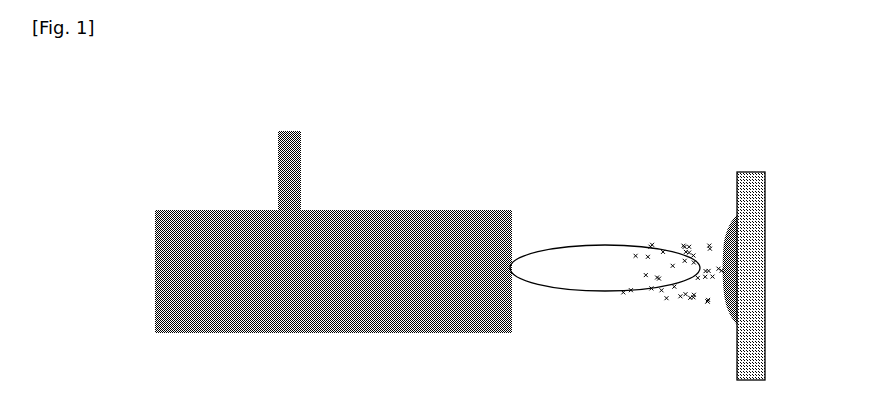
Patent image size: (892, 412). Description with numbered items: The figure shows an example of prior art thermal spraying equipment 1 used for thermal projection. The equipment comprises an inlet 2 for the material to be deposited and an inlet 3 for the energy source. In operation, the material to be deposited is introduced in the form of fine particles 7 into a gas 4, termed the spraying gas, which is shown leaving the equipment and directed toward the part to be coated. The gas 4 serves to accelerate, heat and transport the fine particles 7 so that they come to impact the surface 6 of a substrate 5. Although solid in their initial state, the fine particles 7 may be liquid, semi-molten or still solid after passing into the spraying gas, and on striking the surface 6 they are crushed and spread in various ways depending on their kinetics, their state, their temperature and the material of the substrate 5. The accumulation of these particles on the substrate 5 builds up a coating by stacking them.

The thermal spraying equipment 1 is at (167, 146).
The inlet for the material to be deposited 2 is at (290, 132).
The inlet for the energy source 3 is at (155, 278).
The gas 4 is at (587, 245).
The substrate 5 is at (765, 220).
The surface 6 is at (737, 180).
The fine particles 7 is at (694, 290).